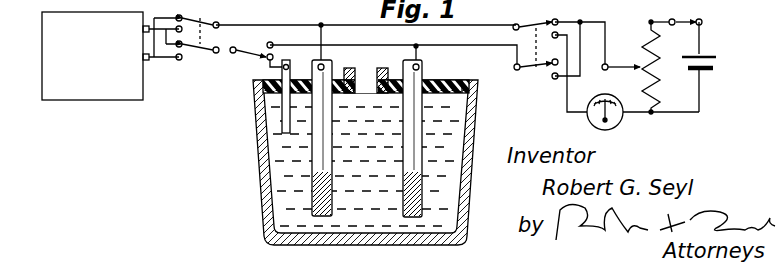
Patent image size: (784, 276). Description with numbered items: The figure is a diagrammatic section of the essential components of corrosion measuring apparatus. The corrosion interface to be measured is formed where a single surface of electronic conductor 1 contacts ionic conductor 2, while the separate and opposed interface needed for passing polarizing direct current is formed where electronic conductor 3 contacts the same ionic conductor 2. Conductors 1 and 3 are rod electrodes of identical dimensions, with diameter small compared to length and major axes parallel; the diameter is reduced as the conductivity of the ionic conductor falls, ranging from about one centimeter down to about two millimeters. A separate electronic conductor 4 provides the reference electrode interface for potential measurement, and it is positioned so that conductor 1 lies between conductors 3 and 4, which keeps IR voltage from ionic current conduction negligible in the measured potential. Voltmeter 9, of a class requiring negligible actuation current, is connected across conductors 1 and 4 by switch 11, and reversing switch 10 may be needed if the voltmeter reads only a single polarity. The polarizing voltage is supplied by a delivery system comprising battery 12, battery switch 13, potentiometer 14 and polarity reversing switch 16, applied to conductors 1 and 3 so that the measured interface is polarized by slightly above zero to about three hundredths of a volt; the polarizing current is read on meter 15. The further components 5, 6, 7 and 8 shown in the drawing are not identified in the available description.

The electronic conductor 1 is at (318, 165).
The ionic conductor 2 is at (283, 205).
The electronic conductor 3 is at (420, 136).
The electronic conductor 4 is at (286, 121).
The container vessel 5 is at (255, 103).
The cover lid 6 is at (456, 83).
The stopper plug 7 is at (357, 88).
The seal 8 is at (466, 97).
The voltmeter 9 is at (116, 100).
The reversing switch 10 is at (195, 44).
The switch 11 is at (247, 53).
The battery 12 is at (717, 69).
The battery switch 13 is at (690, 22).
The potentiometer 14 is at (620, 67).
The meter 15 is at (624, 118).
The polarity reversing switch 16 is at (540, 60).